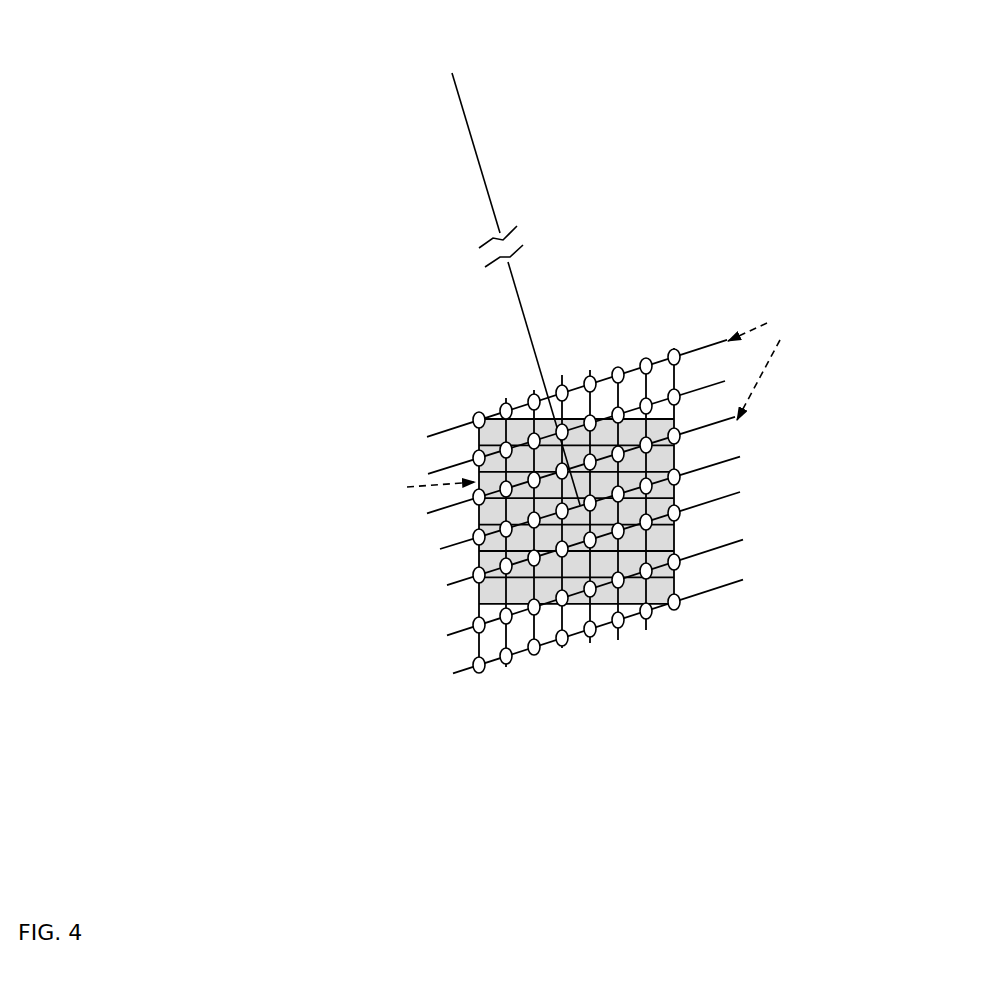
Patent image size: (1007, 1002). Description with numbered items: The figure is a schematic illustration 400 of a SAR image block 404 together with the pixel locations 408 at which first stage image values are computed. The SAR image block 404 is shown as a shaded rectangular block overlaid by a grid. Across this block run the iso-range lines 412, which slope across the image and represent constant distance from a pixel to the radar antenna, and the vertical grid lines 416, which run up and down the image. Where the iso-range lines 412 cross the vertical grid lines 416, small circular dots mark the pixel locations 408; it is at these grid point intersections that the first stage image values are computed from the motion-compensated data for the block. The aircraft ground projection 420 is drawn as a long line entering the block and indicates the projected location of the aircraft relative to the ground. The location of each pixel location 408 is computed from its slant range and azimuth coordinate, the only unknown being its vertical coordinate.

The schematic illustration 400 is at (338, 673).
The SAR image block 404 is at (312, 497).
The pixel locations 408 is at (620, 367).
The iso-range lines 412 is at (827, 287).
The vertical grid lines 416 is at (475, 592).
The aircraft ground projection 420 is at (455, 266).